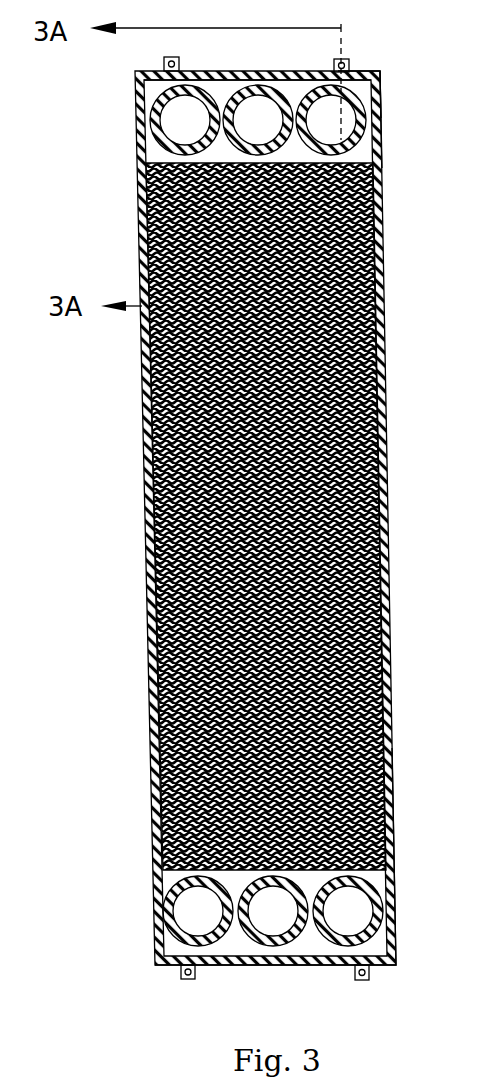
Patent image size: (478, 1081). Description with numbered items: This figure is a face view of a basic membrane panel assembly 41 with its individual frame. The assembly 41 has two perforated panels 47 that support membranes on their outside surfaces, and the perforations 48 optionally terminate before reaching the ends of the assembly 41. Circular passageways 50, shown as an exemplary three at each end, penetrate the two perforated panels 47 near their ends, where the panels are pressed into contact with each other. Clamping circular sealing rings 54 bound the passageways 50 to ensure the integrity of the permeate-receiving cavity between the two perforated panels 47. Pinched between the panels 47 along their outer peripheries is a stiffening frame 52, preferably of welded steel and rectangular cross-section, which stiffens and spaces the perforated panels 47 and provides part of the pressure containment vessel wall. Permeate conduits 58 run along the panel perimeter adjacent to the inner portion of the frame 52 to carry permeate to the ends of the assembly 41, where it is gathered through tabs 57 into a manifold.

The membrane panel assembly 41 is at (391, 580).
The perforated panel 47 is at (378, 468).
The perforations 48 is at (131, 197).
The circular passageways 50 is at (340, 903).
The stiffening frame 52 is at (385, 777).
The clamping circular sealing rings 54 is at (371, 127).
The tabs 57 is at (340, 56).
The permeate conduits 58 is at (370, 100).